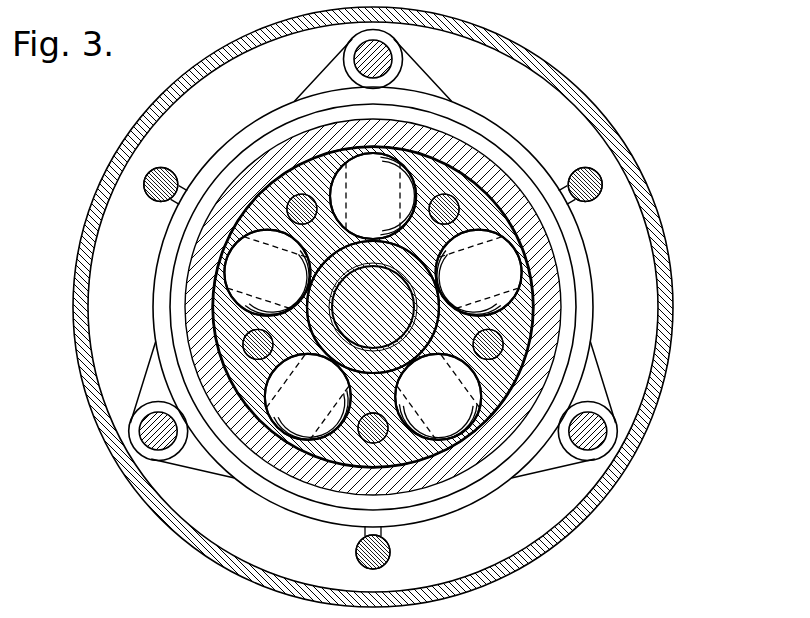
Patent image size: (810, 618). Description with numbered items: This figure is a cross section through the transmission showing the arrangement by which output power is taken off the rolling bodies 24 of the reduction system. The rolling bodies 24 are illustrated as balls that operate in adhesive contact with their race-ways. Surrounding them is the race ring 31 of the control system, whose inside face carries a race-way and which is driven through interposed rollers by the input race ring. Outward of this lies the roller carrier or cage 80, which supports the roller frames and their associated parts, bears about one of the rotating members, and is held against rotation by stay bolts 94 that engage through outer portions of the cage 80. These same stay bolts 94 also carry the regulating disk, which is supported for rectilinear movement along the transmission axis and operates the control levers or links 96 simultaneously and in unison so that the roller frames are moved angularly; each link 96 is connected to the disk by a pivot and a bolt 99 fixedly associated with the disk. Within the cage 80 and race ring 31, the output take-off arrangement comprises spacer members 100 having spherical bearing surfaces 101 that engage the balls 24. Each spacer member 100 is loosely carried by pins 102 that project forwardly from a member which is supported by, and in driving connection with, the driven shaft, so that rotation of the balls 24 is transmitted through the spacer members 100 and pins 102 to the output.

The rolling bodies 24 is at (372, 296).
The race ring 31 is at (488, 147).
The roller carrier or cage 80 is at (430, 88).
The stay bolts 94 is at (388, 60).
The control levers or links 96 is at (172, 206).
The bolt 99 is at (165, 168).
The spacer members 100 is at (291, 174).
The spherical bearing surfaces 101 is at (344, 422).
The pins 102 is at (432, 202).